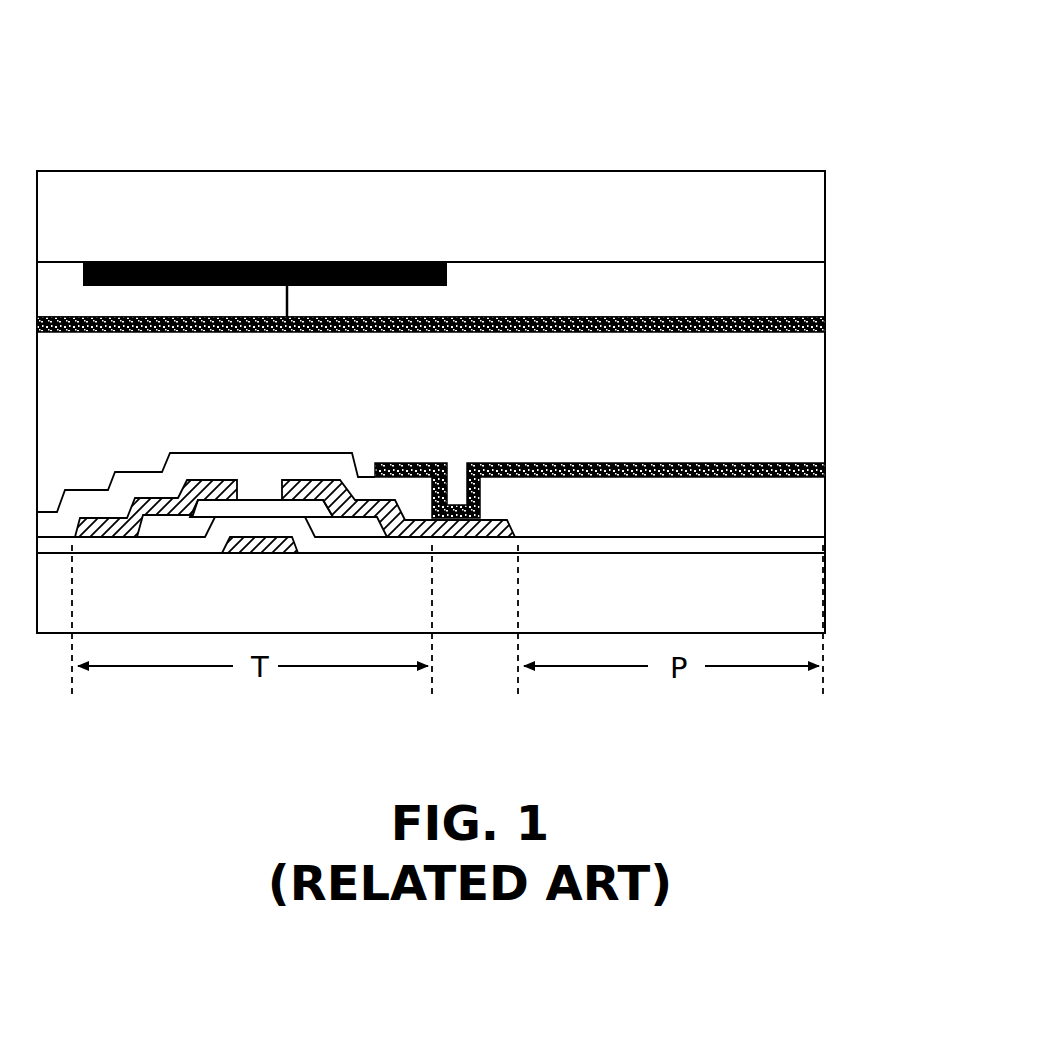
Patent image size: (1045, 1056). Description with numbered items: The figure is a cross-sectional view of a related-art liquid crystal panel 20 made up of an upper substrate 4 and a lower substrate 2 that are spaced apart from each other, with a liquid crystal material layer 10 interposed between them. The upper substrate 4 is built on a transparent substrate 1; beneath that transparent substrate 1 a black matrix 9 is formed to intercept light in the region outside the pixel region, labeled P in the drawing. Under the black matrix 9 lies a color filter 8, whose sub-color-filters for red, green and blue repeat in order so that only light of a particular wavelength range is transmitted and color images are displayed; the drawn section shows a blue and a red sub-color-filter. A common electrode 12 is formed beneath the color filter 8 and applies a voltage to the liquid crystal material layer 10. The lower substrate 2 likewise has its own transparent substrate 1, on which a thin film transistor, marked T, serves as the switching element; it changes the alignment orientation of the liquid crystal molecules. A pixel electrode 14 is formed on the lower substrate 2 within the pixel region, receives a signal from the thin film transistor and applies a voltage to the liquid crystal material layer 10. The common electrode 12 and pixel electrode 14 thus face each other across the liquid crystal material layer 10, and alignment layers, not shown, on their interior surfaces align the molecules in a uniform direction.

The liquid crystal panel 20 is at (783, 138).
The transparent substrate 1 is at (457, 232).
The upper substrate 4 is at (837, 171).
The color filter 8 is at (56, 272).
The black matrix 9 is at (255, 262).
The common electrode 12 is at (101, 332).
The liquid crystal material layer 10 is at (837, 332).
The lower substrate 2 is at (837, 463).
The pixel electrode 14 is at (762, 462).